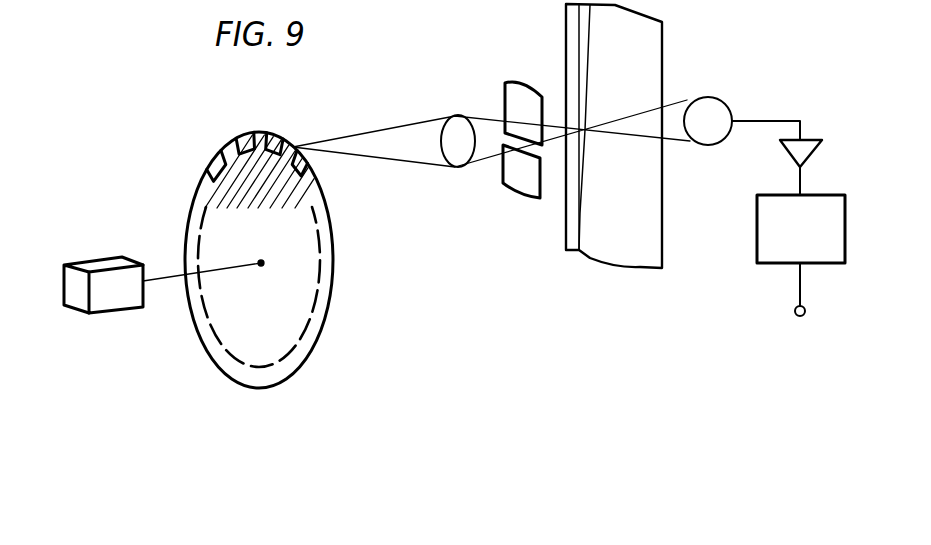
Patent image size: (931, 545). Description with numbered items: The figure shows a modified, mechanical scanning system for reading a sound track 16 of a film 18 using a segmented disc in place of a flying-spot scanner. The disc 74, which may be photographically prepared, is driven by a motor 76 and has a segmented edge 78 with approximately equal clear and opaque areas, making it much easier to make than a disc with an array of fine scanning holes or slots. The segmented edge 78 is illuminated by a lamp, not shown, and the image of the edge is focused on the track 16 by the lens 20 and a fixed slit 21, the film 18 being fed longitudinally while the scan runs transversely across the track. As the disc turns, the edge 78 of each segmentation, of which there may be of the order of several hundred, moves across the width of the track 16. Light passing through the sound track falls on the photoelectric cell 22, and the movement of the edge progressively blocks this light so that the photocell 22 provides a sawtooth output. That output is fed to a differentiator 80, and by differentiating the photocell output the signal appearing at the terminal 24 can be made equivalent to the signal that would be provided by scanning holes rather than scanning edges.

The sound track 16 is at (584, 60).
The film 18 is at (652, 60).
The lens 20 is at (457, 114).
The fixed slit 21 is at (546, 156).
The photoelectric cell 22 is at (718, 141).
The terminal 24 is at (795, 312).
The disc 74 is at (333, 217).
The motor 76 is at (105, 303).
The segmented edge 78 is at (281, 146).
The differentiator 80 is at (757, 233).